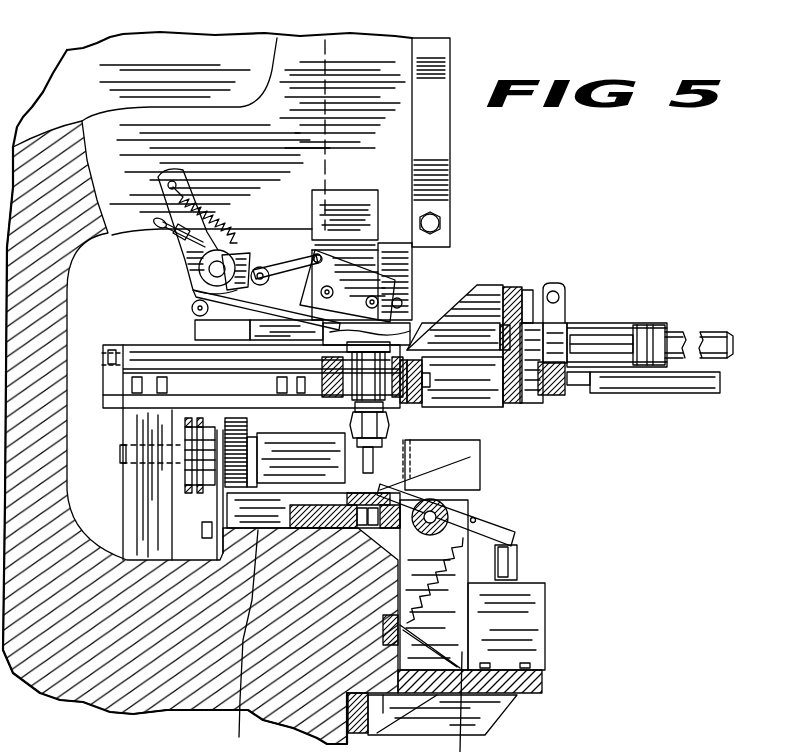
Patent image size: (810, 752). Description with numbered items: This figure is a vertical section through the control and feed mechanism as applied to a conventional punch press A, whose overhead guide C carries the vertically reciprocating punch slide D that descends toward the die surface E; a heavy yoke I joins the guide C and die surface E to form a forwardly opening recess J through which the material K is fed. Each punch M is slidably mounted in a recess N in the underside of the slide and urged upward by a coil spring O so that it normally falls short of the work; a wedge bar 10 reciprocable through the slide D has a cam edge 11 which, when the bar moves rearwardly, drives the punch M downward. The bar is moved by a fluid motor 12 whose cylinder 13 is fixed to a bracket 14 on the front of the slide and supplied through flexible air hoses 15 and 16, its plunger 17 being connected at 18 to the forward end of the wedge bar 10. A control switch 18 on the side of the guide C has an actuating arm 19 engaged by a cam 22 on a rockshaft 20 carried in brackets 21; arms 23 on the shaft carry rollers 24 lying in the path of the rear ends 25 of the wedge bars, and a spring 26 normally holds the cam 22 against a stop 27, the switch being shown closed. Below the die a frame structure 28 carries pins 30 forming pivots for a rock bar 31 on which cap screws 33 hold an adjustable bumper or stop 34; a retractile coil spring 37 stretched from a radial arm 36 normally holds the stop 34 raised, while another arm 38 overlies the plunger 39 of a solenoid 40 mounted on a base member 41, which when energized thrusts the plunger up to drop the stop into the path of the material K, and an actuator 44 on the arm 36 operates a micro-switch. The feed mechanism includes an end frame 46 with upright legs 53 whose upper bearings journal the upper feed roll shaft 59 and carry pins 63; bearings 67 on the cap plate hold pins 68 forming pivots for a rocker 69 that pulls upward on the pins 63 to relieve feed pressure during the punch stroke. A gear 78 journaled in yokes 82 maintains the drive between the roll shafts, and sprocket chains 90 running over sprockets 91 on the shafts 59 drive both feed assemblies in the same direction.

The punch press A is at (68, 48).
The overhead guide C is at (347, 47).
The punch slide D is at (413, 260).
The die surface E is at (248, 640).
The yoke I is at (90, 327).
The recess J is at (116, 289).
The material K is at (395, 492).
The punches M is at (410, 433).
The recess N is at (312, 363).
The coil spring O is at (407, 347).
The wedge bar 10 is at (470, 318).
The cam edges 11 is at (420, 340).
The fluid motor 12 is at (637, 302).
The cylinder 13 is at (660, 327).
The bracket 14 is at (490, 407).
The flexible air hose 15 is at (723, 347).
The flexible air hose 16 is at (687, 385).
The plunger 17 is at (633, 330).
The control switch 18 is at (353, 195).
The actuating arm 19 is at (297, 263).
The rockshaft 20 is at (212, 268).
The brackets 21 is at (177, 257).
The cam 22 is at (240, 250).
The arms 23 is at (187, 293).
The roller 24 is at (190, 310).
The rear ends 25 is at (213, 327).
The spring 26 is at (212, 213).
The stop 27 is at (160, 220).
The frame structure 28 is at (547, 683).
The pins 30 is at (428, 530).
The rock bar 31 is at (477, 503).
The cap screws 33 is at (467, 477).
The bumper or stop 34 is at (413, 480).
The arm 36 is at (498, 530).
The retractile coil spring 37 is at (433, 603).
The arm 38 is at (520, 538).
The plunger 39 is at (515, 565).
The solenoid 40 is at (540, 607).
The base member 41 is at (523, 697).
The actuator 44 is at (480, 510).
The end frame 46 is at (122, 522).
The legs 53 is at (278, 440).
The upper feed roll shaft 59 is at (120, 450).
The pins 63 is at (213, 733).
The bearings 67 is at (103, 387).
The pins 68 is at (102, 357).
The rocker 69 is at (261, 376).
The gear 78 is at (248, 437).
The yokes 82 is at (203, 510).
The sprocket chains 90 is at (177, 415).
The sprockets 91 is at (187, 487).